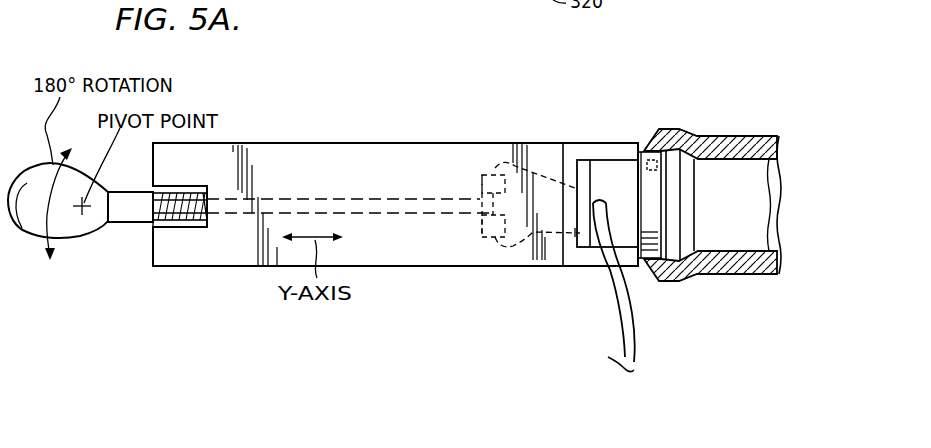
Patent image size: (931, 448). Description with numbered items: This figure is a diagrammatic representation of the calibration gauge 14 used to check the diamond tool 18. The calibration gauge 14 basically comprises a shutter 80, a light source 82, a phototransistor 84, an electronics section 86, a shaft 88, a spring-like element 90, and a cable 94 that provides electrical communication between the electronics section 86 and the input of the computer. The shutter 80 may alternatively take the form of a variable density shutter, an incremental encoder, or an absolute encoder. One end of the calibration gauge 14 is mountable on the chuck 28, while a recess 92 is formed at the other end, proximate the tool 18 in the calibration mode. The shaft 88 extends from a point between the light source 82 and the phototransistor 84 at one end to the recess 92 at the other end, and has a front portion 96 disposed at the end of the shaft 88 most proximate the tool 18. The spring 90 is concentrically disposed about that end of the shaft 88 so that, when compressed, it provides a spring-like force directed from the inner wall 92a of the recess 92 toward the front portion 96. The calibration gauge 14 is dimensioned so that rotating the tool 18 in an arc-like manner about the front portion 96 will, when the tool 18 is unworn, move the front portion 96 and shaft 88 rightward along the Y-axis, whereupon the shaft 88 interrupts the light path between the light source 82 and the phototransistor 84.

The calibration gauge 14 is at (253, 327).
The tool 18 is at (24, 240).
The chuck 28 is at (702, 283).
The shutter 80 is at (460, 197).
The light source 82 is at (482, 175).
The phototransistor 84 is at (483, 237).
The electronics section 86 is at (585, 177).
The shaft 88 is at (277, 195).
The spring-like element 90 is at (173, 217).
The recess 92 is at (173, 195).
The inner wall of the recess 92a is at (207, 220).
The cable 94 is at (637, 347).
The front portion 96 is at (139, 192).